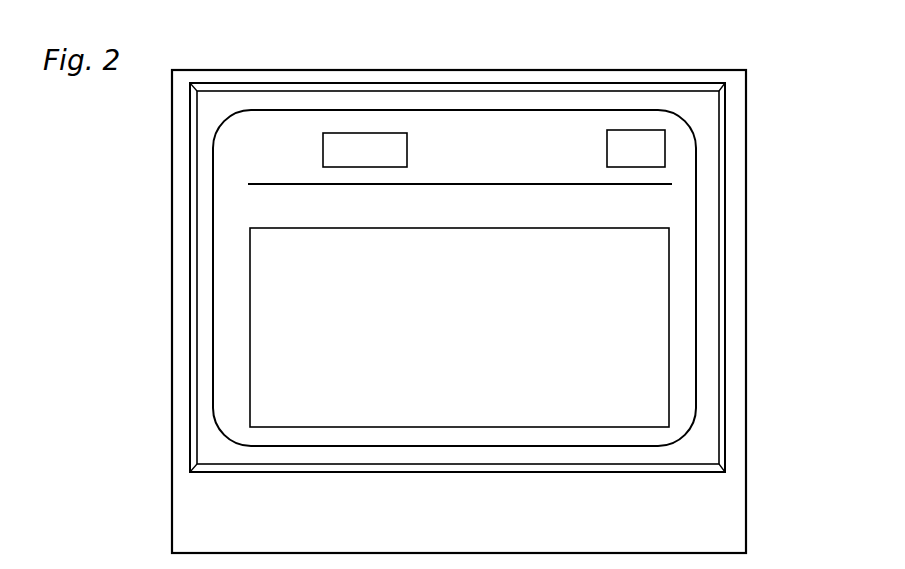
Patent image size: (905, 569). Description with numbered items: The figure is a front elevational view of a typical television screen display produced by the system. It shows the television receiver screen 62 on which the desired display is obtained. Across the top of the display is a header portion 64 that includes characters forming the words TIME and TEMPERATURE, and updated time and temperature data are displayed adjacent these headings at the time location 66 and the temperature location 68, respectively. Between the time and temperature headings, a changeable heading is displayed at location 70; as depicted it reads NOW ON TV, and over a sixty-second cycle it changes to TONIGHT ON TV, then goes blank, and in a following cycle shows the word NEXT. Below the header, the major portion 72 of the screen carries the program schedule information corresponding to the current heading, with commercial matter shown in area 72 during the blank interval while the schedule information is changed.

The television receiver screen 62 is at (670, 66).
The header portion 64 is at (515, 135).
The time data display location 66 is at (370, 134).
The temperature data display location 68 is at (665, 150).
The changeable heading location 70 is at (453, 126).
The major portion of the screen 72 is at (481, 329).